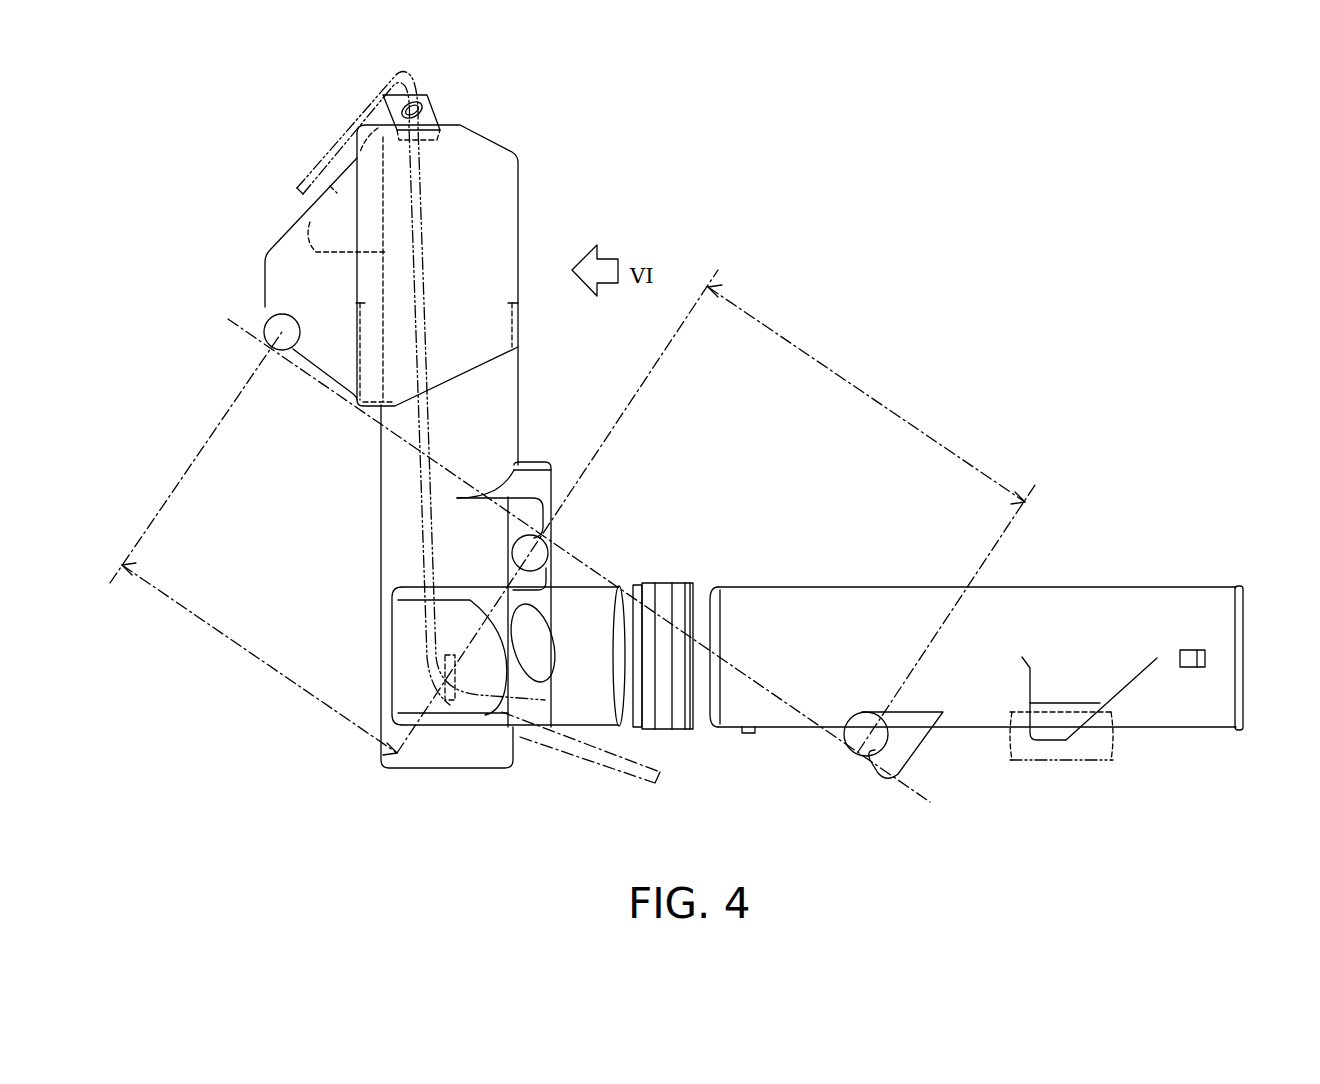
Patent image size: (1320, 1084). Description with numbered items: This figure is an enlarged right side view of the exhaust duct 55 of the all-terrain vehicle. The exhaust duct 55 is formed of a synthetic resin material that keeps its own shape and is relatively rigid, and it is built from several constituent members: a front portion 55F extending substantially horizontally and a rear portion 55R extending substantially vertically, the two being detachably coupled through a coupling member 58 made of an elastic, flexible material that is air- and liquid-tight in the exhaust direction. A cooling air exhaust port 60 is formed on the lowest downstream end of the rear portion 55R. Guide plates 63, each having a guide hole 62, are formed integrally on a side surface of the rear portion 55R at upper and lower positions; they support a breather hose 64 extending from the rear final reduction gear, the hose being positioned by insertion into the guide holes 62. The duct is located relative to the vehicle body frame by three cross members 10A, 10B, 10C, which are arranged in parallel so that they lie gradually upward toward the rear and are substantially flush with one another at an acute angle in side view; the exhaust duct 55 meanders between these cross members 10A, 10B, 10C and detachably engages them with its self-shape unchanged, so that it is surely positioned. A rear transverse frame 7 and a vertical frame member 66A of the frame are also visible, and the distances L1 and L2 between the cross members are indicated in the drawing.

The rear transverse frame 7 is at (1078, 760).
The cross member 10A is at (266, 318).
The cross member 10B is at (512, 548).
The cross member 10C is at (862, 732).
The exhaust duct 55 is at (797, 252).
The front portion 55F is at (1177, 600).
The rear portion 55R is at (518, 200).
The coupling member 58 is at (678, 728).
The cooling air exhaust port 60 is at (470, 370).
The guide hole 62 is at (428, 100).
The guide plate 63 is at (437, 115).
The breather hose 64 is at (335, 140).
The vertical frame member 66A is at (545, 690).
The distance L1 is at (245, 650).
The distance L2 is at (860, 390).